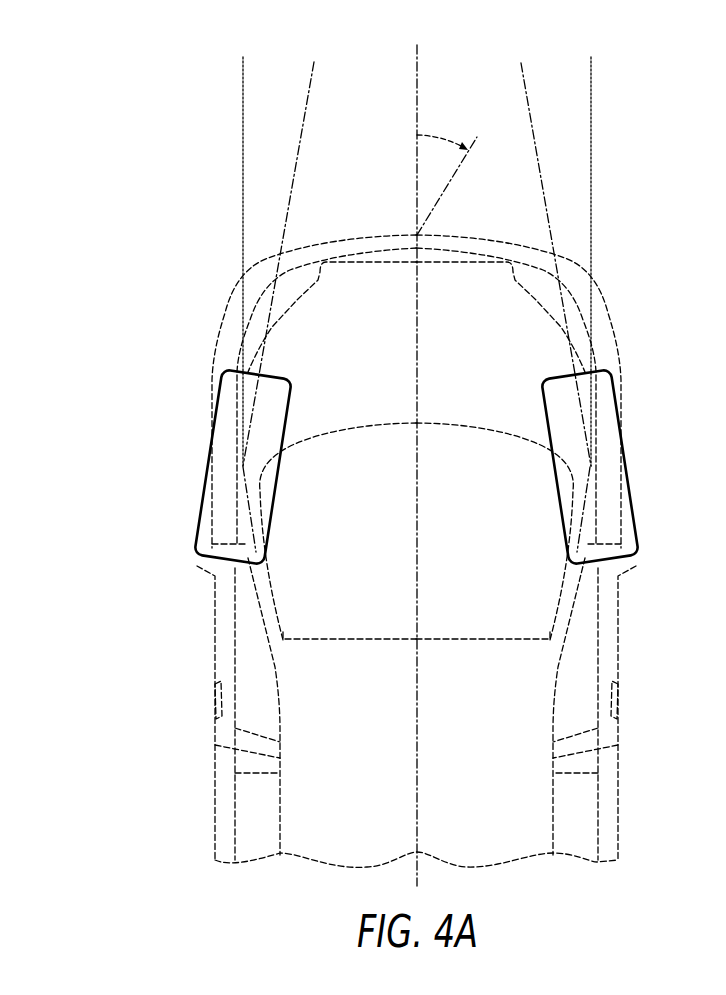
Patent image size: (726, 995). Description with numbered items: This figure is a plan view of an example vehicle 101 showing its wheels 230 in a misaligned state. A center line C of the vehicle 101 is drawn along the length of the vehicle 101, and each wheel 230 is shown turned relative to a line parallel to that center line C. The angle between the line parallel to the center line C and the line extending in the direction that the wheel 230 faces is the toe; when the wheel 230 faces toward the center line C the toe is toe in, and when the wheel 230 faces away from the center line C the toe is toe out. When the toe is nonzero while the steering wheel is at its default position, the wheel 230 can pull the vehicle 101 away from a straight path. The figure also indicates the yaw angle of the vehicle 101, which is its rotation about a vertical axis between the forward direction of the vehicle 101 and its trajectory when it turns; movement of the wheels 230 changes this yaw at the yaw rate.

The vehicle 101 is at (152, 249).
The wheel 230 is at (204, 503).
The center line C is at (417, 101).